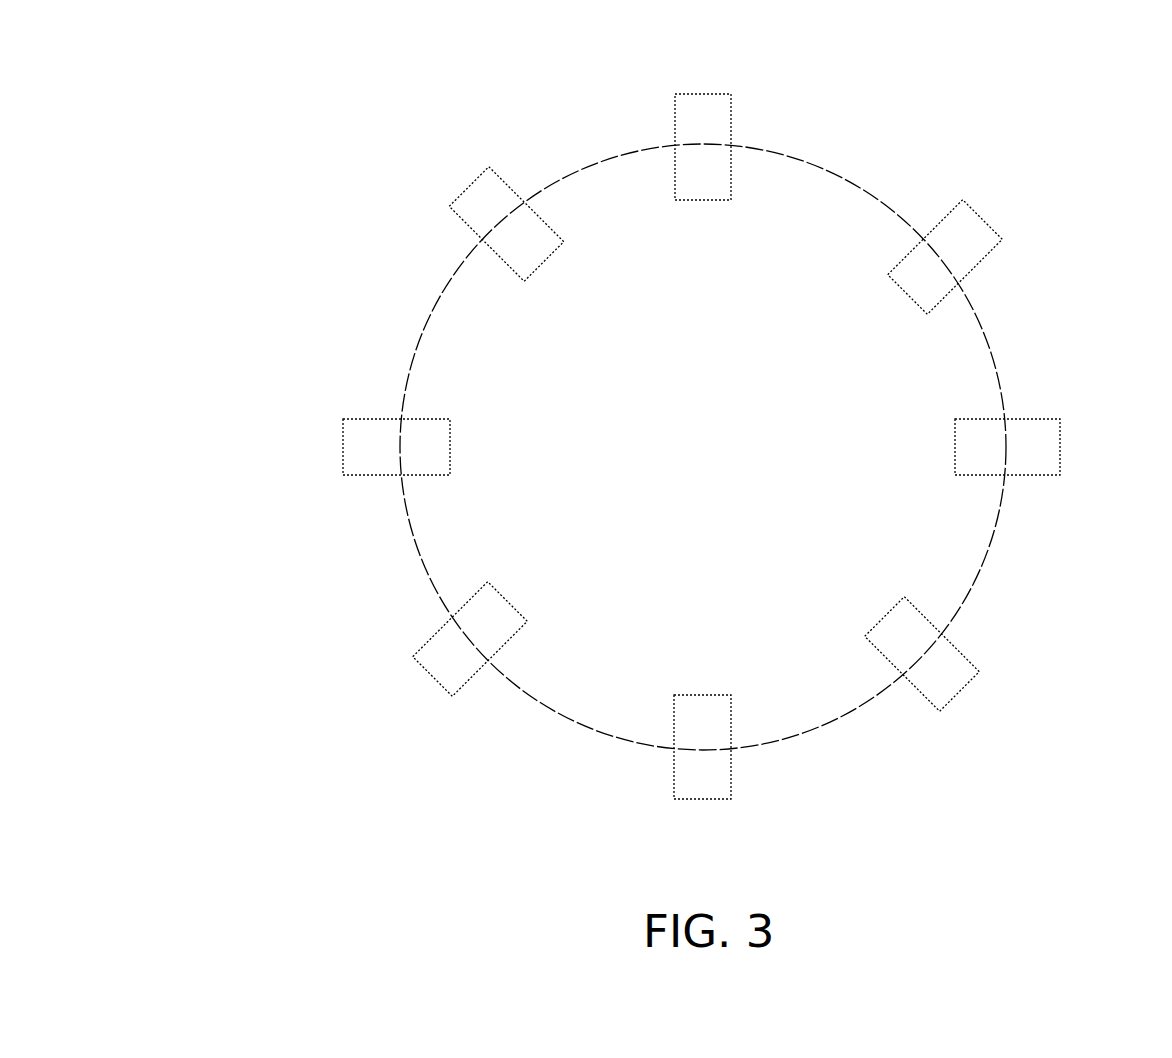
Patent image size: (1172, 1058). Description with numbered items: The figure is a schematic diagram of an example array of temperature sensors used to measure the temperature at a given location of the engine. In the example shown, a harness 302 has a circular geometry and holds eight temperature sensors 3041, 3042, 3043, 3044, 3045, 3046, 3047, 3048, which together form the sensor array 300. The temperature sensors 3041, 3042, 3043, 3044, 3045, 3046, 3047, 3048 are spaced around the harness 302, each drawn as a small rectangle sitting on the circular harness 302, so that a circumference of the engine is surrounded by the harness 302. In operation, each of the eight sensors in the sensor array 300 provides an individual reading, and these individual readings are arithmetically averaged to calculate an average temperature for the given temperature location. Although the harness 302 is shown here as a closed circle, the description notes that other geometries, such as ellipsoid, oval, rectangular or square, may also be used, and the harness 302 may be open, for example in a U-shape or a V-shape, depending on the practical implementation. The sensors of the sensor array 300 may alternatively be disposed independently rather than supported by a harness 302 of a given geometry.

The sensor array 300 is at (218, 235).
The harness 302 is at (426, 320).
The temperature sensor 3041 is at (708, 94).
The temperature sensor 3042 is at (987, 218).
The temperature sensor 3043 is at (1040, 419).
The temperature sensor 3044 is at (973, 660).
The temperature sensor 3045 is at (674, 786).
The temperature sensor 3046 is at (430, 677).
The temperature sensor 3047 is at (343, 436).
The temperature sensor 3048 is at (465, 190).